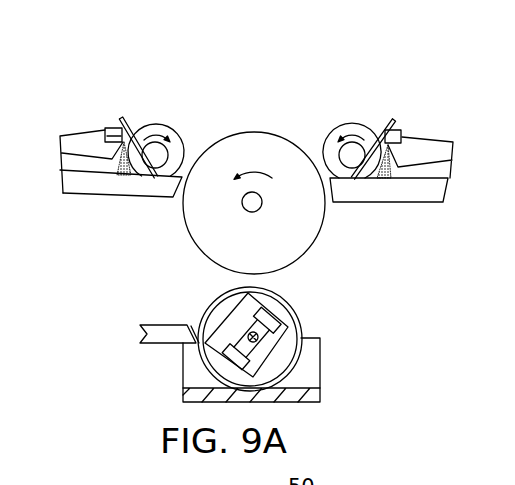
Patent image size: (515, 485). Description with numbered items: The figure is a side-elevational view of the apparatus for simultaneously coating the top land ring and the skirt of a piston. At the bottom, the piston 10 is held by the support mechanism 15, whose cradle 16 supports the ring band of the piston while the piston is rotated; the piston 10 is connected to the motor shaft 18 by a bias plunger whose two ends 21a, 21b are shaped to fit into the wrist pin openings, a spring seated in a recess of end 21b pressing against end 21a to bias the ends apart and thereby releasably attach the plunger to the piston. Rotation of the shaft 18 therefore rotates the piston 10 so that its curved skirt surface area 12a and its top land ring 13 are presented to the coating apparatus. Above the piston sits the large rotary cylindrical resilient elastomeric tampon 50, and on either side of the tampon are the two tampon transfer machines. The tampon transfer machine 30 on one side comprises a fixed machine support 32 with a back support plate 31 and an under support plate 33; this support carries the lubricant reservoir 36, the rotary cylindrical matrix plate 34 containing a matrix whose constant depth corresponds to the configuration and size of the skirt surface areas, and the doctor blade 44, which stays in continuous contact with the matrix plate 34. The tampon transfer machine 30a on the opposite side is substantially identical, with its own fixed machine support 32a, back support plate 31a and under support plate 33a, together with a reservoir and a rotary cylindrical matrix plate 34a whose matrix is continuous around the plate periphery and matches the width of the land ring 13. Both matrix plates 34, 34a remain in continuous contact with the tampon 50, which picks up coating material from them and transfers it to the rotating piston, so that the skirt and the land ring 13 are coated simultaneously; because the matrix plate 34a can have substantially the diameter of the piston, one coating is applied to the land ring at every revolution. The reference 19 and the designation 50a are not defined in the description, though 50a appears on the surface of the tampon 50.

The piston 10 is at (315, 278).
The curved surface area of piston skirt 12a is at (207, 306).
The top land ring 13 is at (223, 312).
The support mechanism 15 is at (326, 396).
The cradle 16 is at (317, 363).
The motor shaft 18 is at (304, 346).
The actuating lever 19 is at (140, 333).
The plunger end 21a is at (250, 349).
The plunger end 21b is at (250, 349).
The tampon transfer machine 30 is at (205, 94).
The tampon transfer machine 30a is at (356, 111).
The back support plate 31 is at (59, 136).
The back support plate 31a is at (445, 148).
The fixed machine support 32 is at (92, 128).
The fixed machine support 32a is at (431, 126).
The under support plate 33 is at (87, 187).
The under support plate 33a is at (435, 190).
The rotary cylindrical matrix plate 34 is at (160, 123).
The rotary cylindrical matrix plate 34a is at (341, 177).
The lubricant reservoir 36 is at (123, 176).
The doctor blade 44 is at (115, 128).
The rotary cylindrical resilient elastomeric tampon 50 is at (303, 157).
The drum surface 50a is at (250, 133).